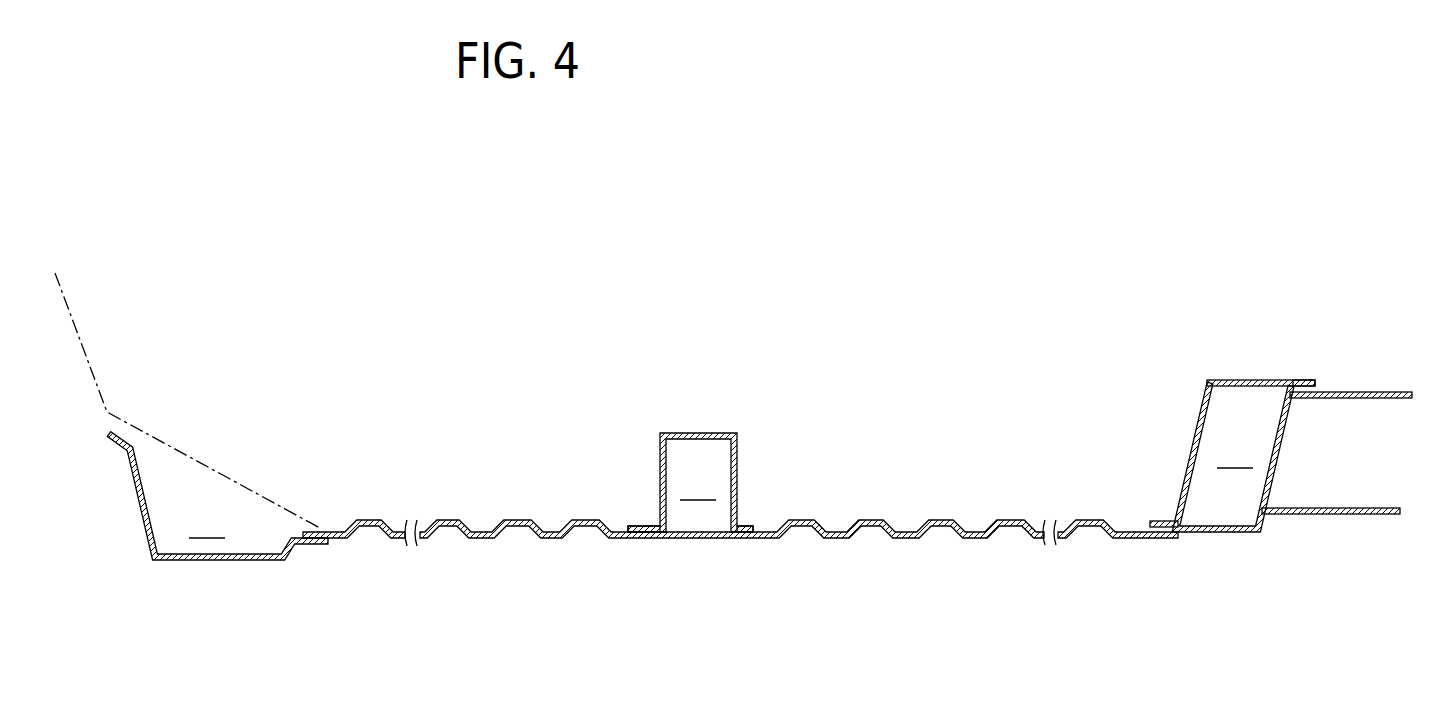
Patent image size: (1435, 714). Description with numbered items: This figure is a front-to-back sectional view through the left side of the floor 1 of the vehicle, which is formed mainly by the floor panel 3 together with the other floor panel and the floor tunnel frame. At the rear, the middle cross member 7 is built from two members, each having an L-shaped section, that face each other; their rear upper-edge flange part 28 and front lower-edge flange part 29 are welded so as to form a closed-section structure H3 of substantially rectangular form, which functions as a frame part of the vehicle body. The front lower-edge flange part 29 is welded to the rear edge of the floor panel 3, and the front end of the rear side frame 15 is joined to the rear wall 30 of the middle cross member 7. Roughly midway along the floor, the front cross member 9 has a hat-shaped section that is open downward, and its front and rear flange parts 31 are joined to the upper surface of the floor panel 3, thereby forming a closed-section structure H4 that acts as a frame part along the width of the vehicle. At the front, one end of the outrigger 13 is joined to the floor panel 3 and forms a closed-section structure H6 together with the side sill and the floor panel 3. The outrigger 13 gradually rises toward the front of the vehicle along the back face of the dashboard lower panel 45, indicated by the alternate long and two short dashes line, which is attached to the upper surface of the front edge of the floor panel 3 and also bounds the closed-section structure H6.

The floor 1 is at (850, 385).
The floor panel 3 is at (447, 518).
The middle cross member 7 is at (1253, 380).
The front cross member 9 is at (695, 432).
The outrigger 13 is at (240, 562).
The rear side frame 15 is at (1382, 392).
The rear upper-edge flange part 28 is at (1307, 380).
The front lower-edge flange part 29 is at (1163, 518).
The rear wall 30 is at (1262, 522).
The flange parts 31 is at (647, 523).
The dashboard lower panel 45 is at (80, 332).
The closed-section structure H6 is at (207, 523).
The closed-section structure H4 is at (698, 485).
The closed-section structure H3 is at (1235, 453).